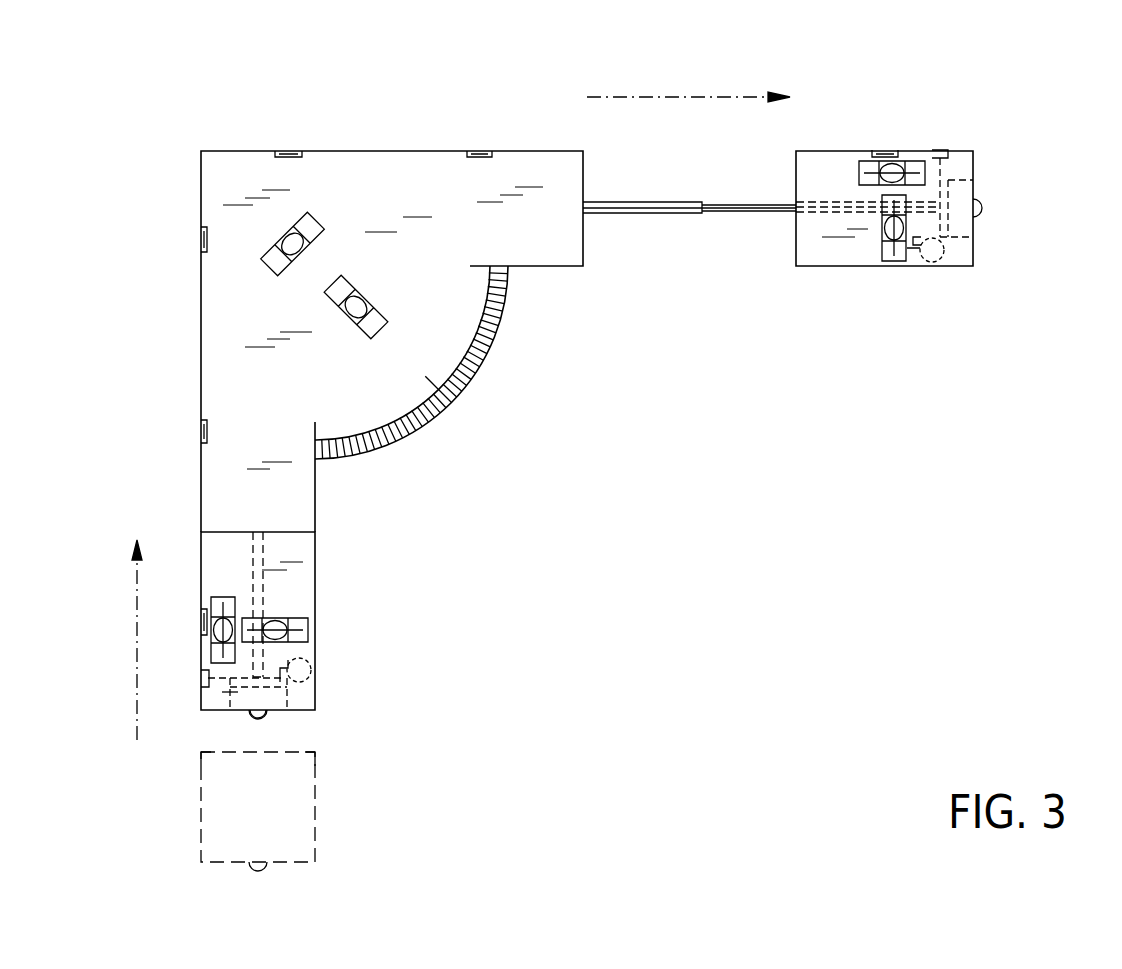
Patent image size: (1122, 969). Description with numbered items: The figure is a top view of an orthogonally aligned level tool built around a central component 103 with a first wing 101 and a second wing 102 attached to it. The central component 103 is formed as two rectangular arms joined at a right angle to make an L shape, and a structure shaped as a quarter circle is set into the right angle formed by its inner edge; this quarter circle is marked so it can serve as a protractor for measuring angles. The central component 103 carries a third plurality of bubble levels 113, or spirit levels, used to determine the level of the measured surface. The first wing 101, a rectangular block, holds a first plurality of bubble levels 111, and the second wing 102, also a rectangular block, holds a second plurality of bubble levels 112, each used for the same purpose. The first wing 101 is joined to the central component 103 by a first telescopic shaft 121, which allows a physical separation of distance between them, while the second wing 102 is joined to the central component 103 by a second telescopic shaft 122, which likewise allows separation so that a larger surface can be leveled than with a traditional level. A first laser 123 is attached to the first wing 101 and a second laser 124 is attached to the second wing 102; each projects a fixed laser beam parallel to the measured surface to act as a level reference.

The first wing 101 is at (317, 648).
The second wing 102 is at (827, 150).
The central component 103 is at (341, 168).
The first plurality of bubble levels 111 is at (238, 597).
The second plurality of bubble levels 112 is at (907, 224).
The third plurality of bubble levels 113 is at (363, 297).
The first telescopic shaft 121 is at (258, 558).
The second telescopic shaft 122 is at (647, 205).
The first laser 123 is at (258, 720).
The second laser 124 is at (983, 208).